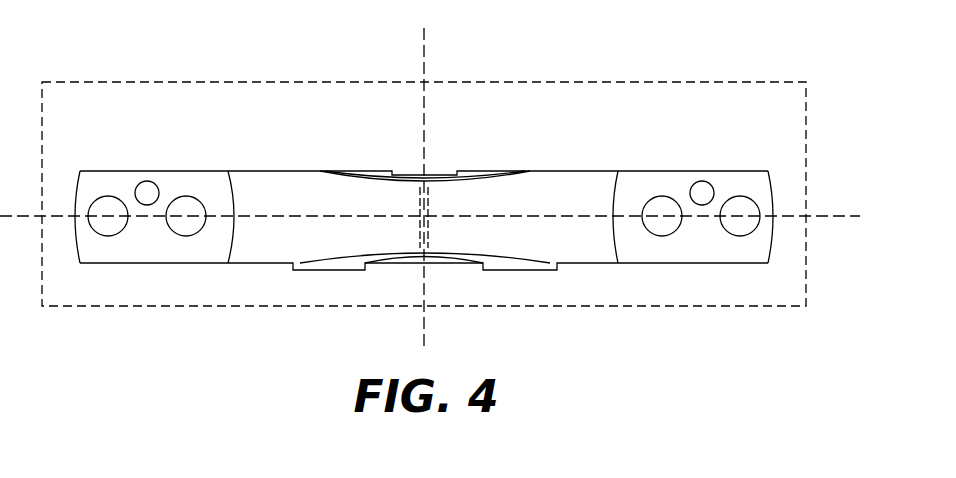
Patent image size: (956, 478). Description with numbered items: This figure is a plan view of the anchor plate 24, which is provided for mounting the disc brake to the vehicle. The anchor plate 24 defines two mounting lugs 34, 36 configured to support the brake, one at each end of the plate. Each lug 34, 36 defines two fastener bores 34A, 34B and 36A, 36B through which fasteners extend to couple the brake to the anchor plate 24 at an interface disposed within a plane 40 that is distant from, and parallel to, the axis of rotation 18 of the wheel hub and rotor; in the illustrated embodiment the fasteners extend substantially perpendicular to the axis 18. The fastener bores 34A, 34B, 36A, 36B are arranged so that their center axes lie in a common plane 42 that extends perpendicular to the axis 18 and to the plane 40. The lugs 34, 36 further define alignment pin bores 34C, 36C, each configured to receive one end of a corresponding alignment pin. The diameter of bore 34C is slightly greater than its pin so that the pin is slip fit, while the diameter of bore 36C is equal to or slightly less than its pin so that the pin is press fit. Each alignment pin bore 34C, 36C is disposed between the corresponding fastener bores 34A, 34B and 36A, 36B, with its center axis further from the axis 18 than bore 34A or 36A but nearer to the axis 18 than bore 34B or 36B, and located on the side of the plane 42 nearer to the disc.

The axis of rotation 18 is at (424, 58).
The anchor plate 24 is at (522, 250).
The mounting lug 34 is at (154, 221).
The fastener bore 34A is at (196, 205).
The fastener bore 34B is at (108, 202).
The alignment pin bore 34C is at (150, 190).
The mounting lug 36 is at (702, 234).
The fastener bore 36A is at (665, 205).
The fastener bore 36B is at (745, 205).
The alignment pin bore 36C is at (705, 190).
The plane 40 is at (727, 82).
The common plane 42 is at (838, 216).